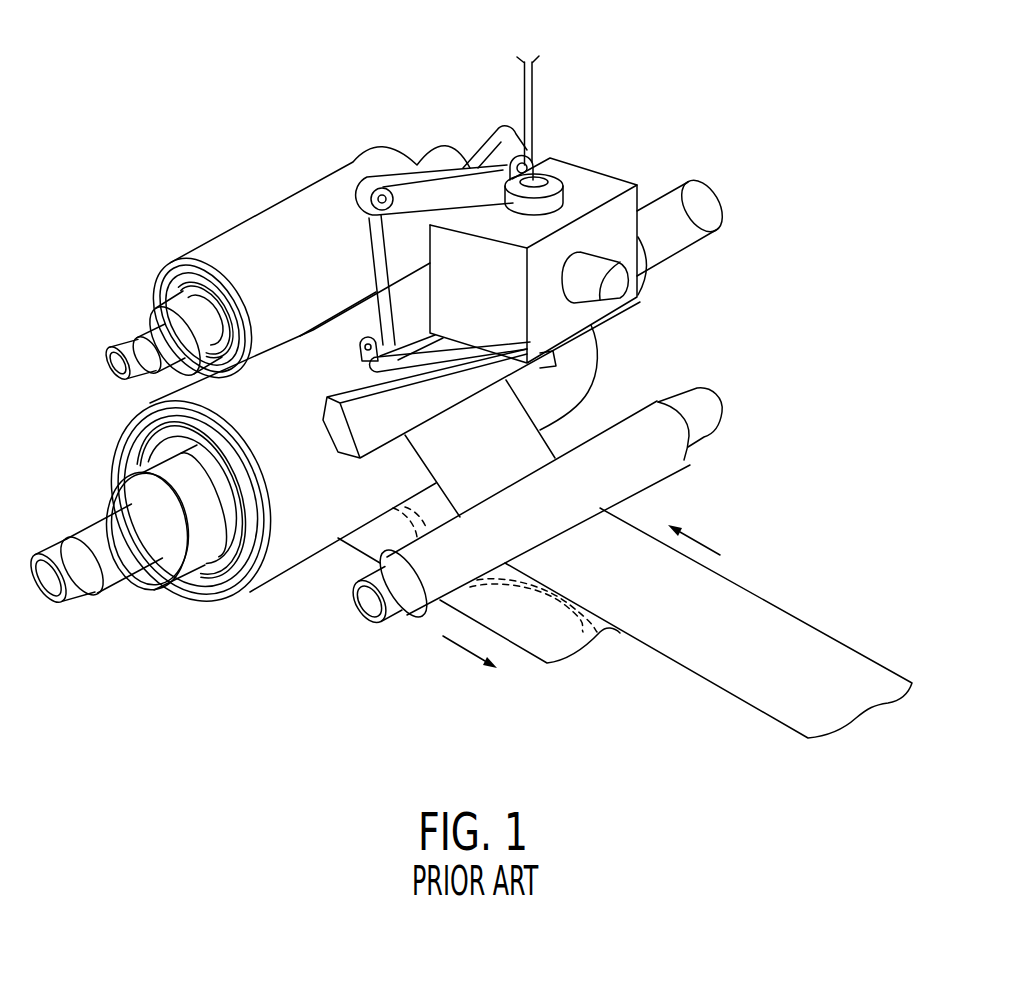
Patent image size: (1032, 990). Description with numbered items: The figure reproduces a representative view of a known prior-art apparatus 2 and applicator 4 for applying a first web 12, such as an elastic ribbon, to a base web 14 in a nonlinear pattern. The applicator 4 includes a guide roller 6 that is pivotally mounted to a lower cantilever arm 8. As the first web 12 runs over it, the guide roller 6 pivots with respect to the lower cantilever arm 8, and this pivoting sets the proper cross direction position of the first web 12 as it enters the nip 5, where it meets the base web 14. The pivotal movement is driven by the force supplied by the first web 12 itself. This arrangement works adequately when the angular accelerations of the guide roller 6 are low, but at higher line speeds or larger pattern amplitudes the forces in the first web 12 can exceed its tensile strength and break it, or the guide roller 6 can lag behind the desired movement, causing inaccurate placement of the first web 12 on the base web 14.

The apparatus 2 is at (130, 207).
The applicator 4 is at (697, 110).
The nip 5 is at (284, 353).
The guide roller 6 is at (373, 330).
The lower cantilever arm 8 is at (488, 366).
The first web 12 is at (534, 100).
The base web 14 is at (798, 644).